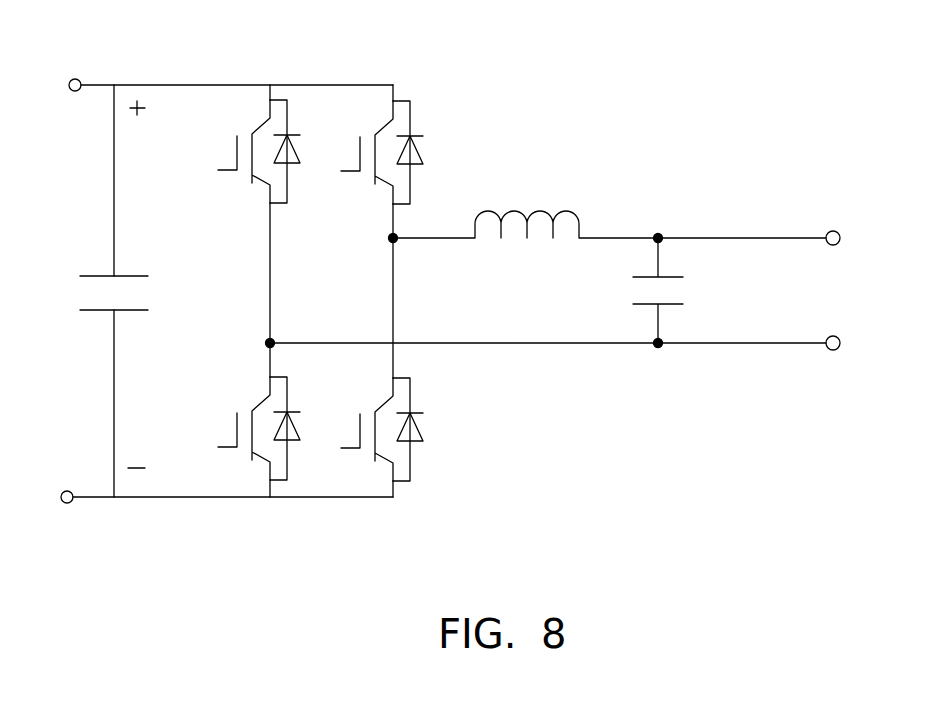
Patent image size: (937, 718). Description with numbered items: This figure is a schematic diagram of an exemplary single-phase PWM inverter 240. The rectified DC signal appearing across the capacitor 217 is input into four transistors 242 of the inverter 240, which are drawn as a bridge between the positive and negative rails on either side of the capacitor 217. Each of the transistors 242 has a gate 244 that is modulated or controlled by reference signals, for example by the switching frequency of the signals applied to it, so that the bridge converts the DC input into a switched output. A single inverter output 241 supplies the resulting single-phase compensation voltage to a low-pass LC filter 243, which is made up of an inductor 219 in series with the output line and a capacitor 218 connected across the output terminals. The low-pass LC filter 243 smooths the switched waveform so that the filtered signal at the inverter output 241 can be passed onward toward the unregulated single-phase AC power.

The PWM inverter 240 is at (463, 88).
The inverter output 241 is at (860, 275).
The capacitor 217 is at (80, 290).
The capacitor 218 is at (690, 290).
The inductor 219 is at (573, 203).
The transistors 242 is at (243, 447).
The low-pass LC filter 243 is at (633, 347).
The gate 244 is at (233, 150).